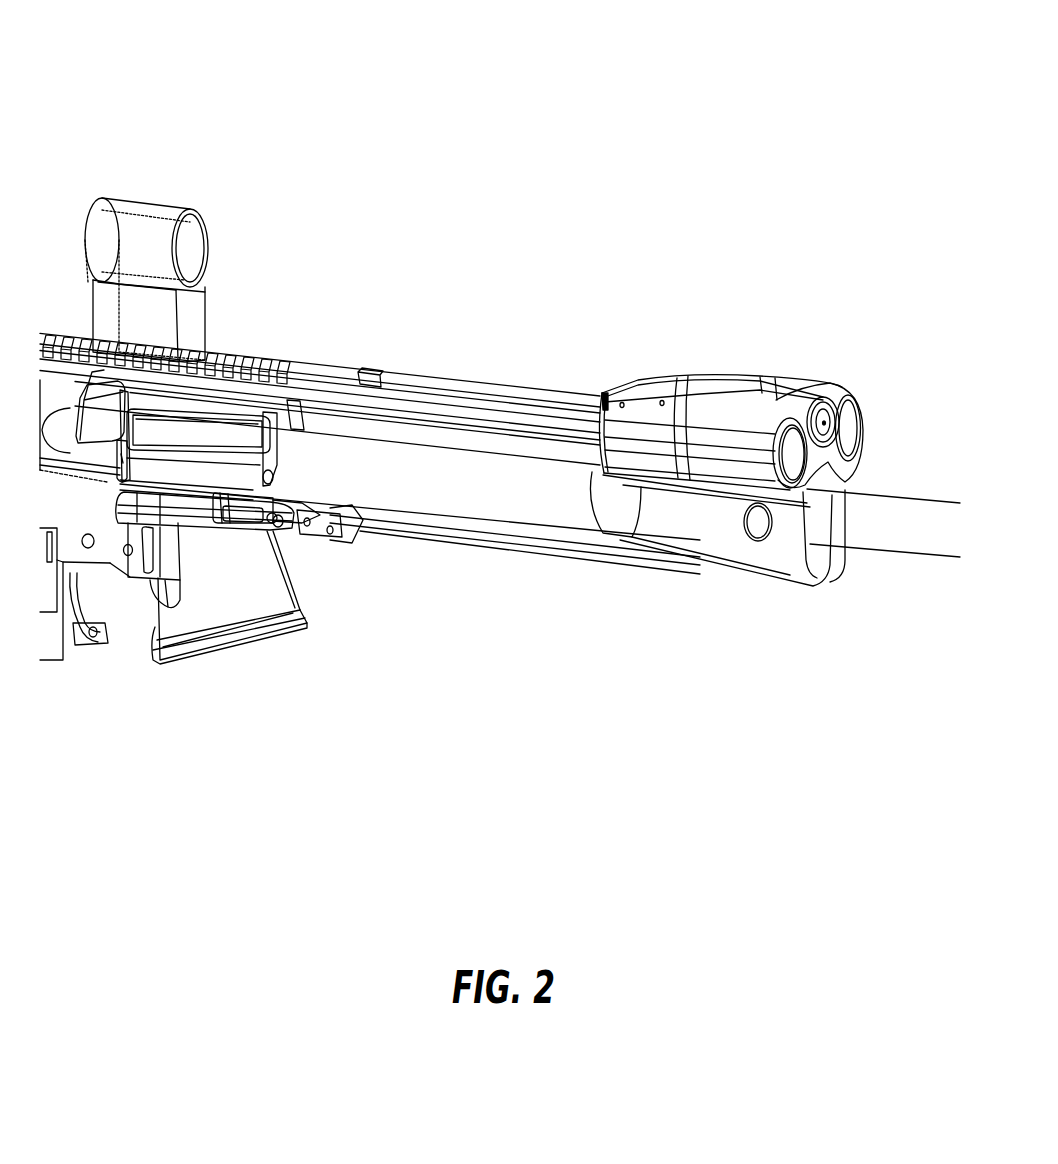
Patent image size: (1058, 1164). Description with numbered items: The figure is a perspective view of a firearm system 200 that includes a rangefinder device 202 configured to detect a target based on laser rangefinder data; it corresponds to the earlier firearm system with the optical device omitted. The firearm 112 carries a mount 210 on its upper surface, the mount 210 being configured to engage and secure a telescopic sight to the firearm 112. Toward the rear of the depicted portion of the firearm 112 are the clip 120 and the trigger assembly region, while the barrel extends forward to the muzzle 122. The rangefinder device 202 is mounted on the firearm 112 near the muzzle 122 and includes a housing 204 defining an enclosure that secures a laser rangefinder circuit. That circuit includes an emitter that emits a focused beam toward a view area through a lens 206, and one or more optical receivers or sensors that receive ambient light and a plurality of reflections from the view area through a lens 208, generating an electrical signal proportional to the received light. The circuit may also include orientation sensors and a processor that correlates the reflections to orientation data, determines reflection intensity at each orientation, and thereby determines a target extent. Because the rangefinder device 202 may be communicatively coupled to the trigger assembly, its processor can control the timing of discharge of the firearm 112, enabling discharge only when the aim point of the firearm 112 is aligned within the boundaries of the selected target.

The firearm system 200 is at (127, 44).
The firearm 112 is at (840, 646).
The clip 120 is at (246, 620).
The mount 210 is at (132, 214).
The rangefinder device 202 is at (815, 334).
The housing 204 is at (770, 388).
The lens 206 is at (837, 425).
The lens 208 is at (783, 460).
The muzzle 122 is at (922, 540).